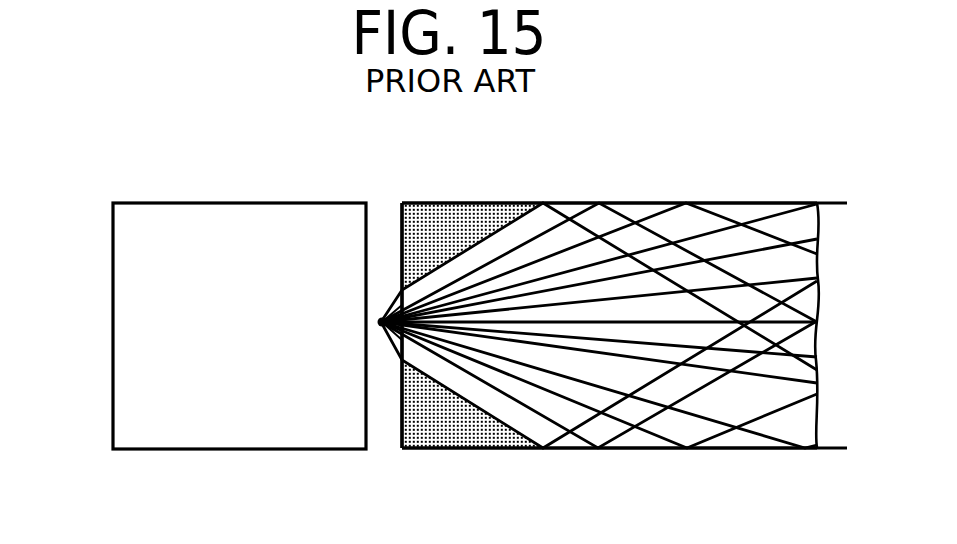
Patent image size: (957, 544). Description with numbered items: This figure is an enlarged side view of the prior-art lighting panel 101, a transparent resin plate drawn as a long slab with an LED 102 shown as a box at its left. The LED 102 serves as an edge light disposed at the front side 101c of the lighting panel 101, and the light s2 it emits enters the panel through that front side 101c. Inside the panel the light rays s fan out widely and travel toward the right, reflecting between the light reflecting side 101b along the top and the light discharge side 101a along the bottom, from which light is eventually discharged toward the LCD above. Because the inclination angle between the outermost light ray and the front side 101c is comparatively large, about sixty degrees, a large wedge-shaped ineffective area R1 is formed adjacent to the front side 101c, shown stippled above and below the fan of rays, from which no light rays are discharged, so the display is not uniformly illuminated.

The LED 102 is at (190, 202).
The lighting panel 101 is at (735, 208).
The light discharge side 101a is at (647, 450).
The light reflecting side 101b is at (566, 203).
The front side 101c is at (402, 414).
The ineffective area R1 is at (455, 428).
The light ray s is at (495, 245).
The light emitted from the LEDs s2 is at (382, 318).